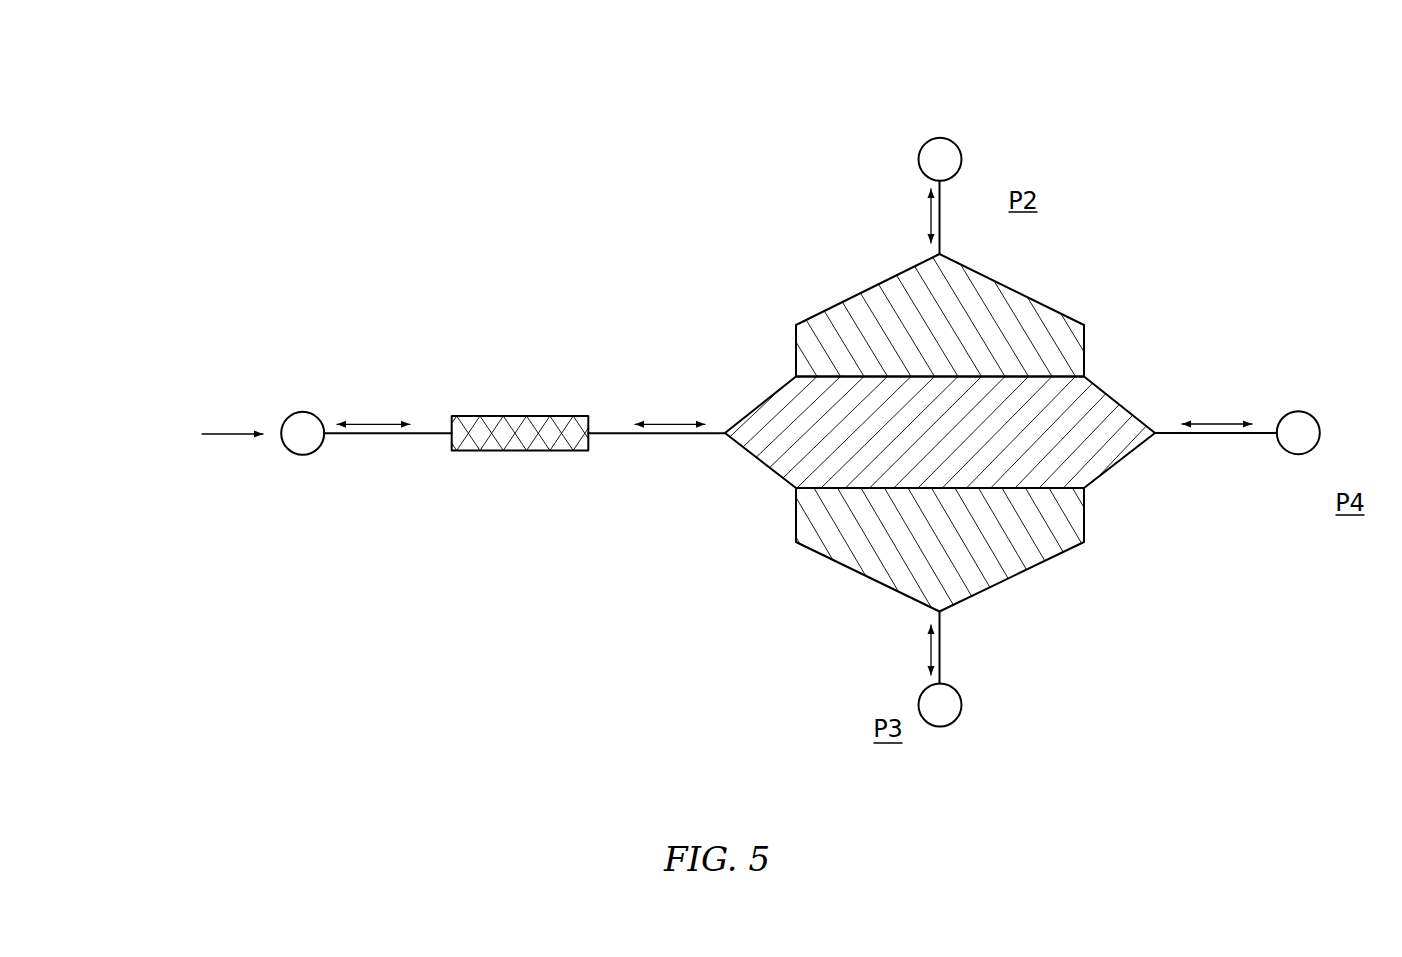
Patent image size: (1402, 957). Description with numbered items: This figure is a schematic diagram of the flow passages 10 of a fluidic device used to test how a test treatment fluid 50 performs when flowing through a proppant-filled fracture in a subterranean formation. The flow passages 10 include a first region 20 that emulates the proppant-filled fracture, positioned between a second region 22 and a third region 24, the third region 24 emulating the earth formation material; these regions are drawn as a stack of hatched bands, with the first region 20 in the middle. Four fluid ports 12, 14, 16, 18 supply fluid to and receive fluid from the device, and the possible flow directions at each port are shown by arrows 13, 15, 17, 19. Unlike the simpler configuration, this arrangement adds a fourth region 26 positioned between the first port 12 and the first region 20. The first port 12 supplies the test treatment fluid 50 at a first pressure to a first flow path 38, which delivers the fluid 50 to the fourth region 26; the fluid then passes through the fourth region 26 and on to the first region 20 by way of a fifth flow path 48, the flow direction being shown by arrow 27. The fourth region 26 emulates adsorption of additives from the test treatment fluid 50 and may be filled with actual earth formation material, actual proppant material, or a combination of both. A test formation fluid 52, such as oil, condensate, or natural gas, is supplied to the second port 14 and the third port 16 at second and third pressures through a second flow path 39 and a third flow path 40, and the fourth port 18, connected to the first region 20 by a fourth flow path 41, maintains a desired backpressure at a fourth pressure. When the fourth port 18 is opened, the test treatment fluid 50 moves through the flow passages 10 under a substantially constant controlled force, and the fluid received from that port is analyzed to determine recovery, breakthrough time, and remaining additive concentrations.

The flow passages 10 is at (1133, 183).
The first fluid port 12 is at (291, 415).
The flow direction arrow 13 is at (365, 420).
The second fluid port 14 is at (928, 140).
The flow direction arrow 15 is at (927, 213).
The third fluid port 16 is at (960, 698).
The flow direction arrow 17 is at (928, 643).
The fourth fluid port 18 is at (1310, 410).
The flow direction arrow 19 is at (1210, 420).
The first region 20 is at (1105, 407).
The second region 22 is at (1022, 310).
The third region 24 is at (1050, 550).
The fourth region 26 is at (472, 425).
The flow direction arrow 27 is at (665, 421).
The first flow path 38 is at (382, 435).
The second flow path 39 is at (942, 210).
The third flow path 40 is at (942, 629).
The fourth flow path 41 is at (1197, 437).
The fifth flow path 48 is at (682, 435).
The test treatment fluid 50 is at (217, 430).
The test formation fluid 52 is at (968, 128).